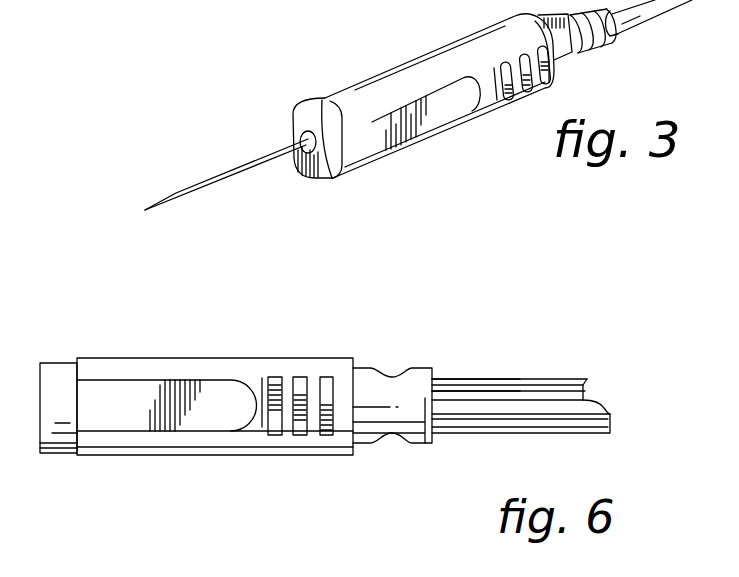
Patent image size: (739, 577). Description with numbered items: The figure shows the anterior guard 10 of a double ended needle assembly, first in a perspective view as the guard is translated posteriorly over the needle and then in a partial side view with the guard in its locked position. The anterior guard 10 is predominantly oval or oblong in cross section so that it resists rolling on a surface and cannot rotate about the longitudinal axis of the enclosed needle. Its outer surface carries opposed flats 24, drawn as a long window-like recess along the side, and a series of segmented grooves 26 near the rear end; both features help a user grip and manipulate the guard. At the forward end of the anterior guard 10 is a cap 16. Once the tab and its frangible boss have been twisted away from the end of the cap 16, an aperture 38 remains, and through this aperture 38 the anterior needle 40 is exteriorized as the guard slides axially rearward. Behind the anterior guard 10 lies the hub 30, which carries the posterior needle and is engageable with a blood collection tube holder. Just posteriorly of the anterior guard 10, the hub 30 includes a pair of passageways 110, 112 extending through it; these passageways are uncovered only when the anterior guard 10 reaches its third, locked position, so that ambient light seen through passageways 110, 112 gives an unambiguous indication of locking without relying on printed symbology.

In FIG. 3, the anterior guard 10 is at (388, 68).
In FIG. 6, the anterior guard 10 is at (212, 354).
In FIG. 3, the cap 16 is at (341, 152).
In FIG. 6, the cap 16 is at (53, 362).
In FIG. 3, the opposed flats 24 is at (444, 114).
In FIG. 6, the opposed flats 24 is at (207, 415).
In FIG. 3, the segmented grooves 26 is at (533, 98).
In FIG. 6, the segmented grooves 26 is at (300, 378).
In FIG. 6, the hub 30 is at (553, 369).
In FIG. 3, the aperture 38 is at (311, 180).
In FIG. 3, the anterior needle 40 is at (214, 187).
In FIG. 6, the passageway 110 is at (440, 390).
In FIG. 6, the passageway 112 is at (443, 424).